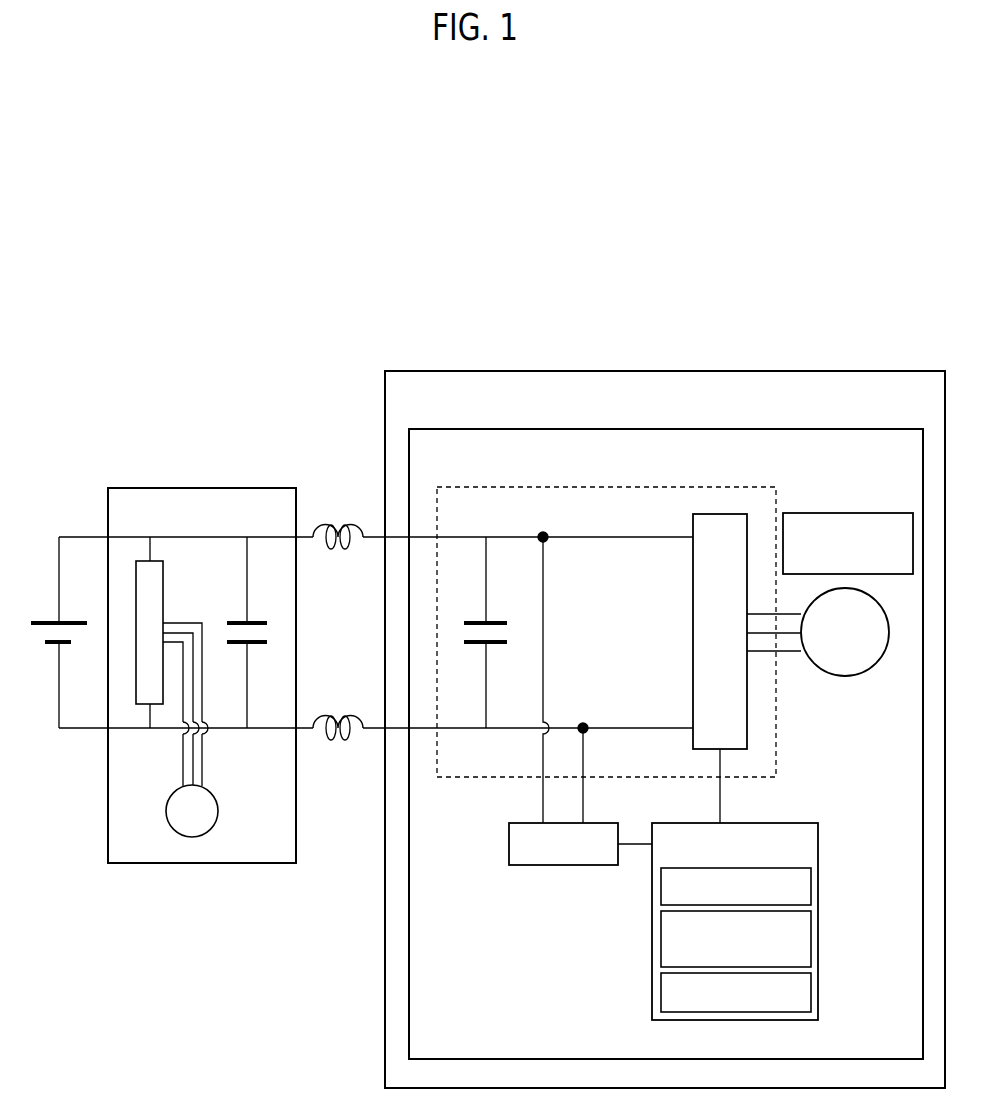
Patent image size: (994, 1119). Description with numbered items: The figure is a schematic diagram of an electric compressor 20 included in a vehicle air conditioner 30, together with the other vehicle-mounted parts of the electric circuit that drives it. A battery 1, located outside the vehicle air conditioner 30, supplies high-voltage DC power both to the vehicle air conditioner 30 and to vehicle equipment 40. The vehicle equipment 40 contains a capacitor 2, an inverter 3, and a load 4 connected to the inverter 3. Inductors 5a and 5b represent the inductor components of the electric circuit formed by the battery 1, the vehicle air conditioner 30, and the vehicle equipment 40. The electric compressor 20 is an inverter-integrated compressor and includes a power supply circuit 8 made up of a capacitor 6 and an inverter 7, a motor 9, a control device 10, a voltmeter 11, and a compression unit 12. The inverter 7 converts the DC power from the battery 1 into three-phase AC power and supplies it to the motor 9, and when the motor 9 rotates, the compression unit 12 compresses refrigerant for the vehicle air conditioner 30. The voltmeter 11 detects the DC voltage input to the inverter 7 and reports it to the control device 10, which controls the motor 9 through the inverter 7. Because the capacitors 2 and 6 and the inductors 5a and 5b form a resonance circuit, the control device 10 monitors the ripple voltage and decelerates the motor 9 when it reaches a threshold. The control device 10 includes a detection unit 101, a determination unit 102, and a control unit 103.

The battery 1 is at (67, 622).
The capacitor 2 is at (257, 622).
The inverter 3 is at (165, 582).
The load 4 is at (218, 811).
The inductor 5a is at (338, 522).
The inductor 5b is at (338, 713).
The capacitor 6 is at (497, 620).
The inverter 7 is at (693, 632).
The power supply circuit 8 is at (497, 487).
The motor 9 is at (845, 677).
The control device 10 is at (769, 907).
The voltmeter 11 is at (562, 865).
The compression unit 12 is at (850, 513).
The electric compressor 20 is at (823, 429).
The vehicle air conditioner 30 is at (843, 371).
The vehicle equipment 40 is at (237, 488).
The detection unit 101 is at (811, 890).
The determination unit 102 is at (811, 935).
The control unit 103 is at (811, 997).